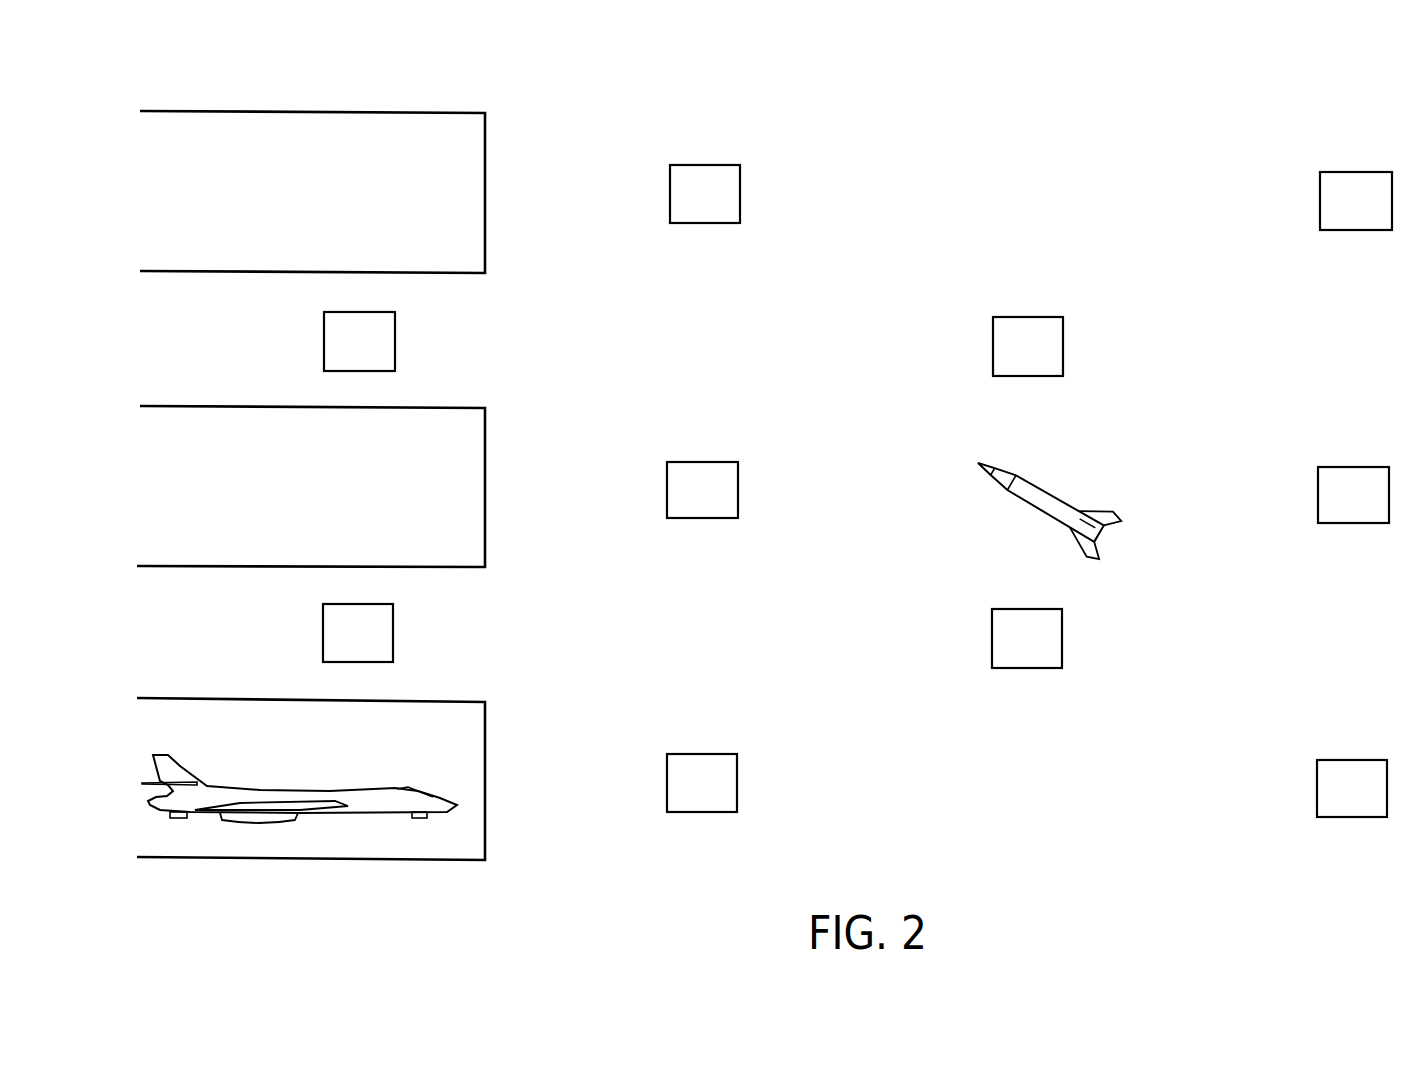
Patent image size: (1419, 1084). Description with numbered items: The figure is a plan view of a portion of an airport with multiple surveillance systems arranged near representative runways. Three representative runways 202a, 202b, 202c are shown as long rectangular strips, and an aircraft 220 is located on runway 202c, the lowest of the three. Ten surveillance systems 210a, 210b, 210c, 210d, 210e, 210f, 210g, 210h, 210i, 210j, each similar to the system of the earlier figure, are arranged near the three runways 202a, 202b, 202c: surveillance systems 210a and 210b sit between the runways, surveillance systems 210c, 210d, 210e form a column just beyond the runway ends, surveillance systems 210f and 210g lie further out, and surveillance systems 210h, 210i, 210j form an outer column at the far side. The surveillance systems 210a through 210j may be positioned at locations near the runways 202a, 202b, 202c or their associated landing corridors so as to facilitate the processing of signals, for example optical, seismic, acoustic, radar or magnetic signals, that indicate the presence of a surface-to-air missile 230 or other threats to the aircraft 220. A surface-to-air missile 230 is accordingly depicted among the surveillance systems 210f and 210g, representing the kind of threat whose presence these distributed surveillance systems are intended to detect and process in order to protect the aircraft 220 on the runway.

The runway 202a is at (443, 112).
The runway 202b is at (443, 407).
The runway 202c is at (443, 701).
The surveillance system 210a is at (389, 355).
The surveillance system 210b is at (387, 647).
The surveillance system 210c is at (734, 209).
The surveillance system 210d is at (731, 504).
The surveillance system 210e is at (731, 798).
The surveillance system 210f is at (1057, 361).
The surveillance system 210g is at (1056, 652).
The surveillance system 210h is at (1384, 216).
The surveillance system 210i is at (1382, 509).
The surveillance system 210j is at (1381, 803).
The aircraft 220 is at (258, 790).
The surface-to-air missile 230 is at (1063, 502).